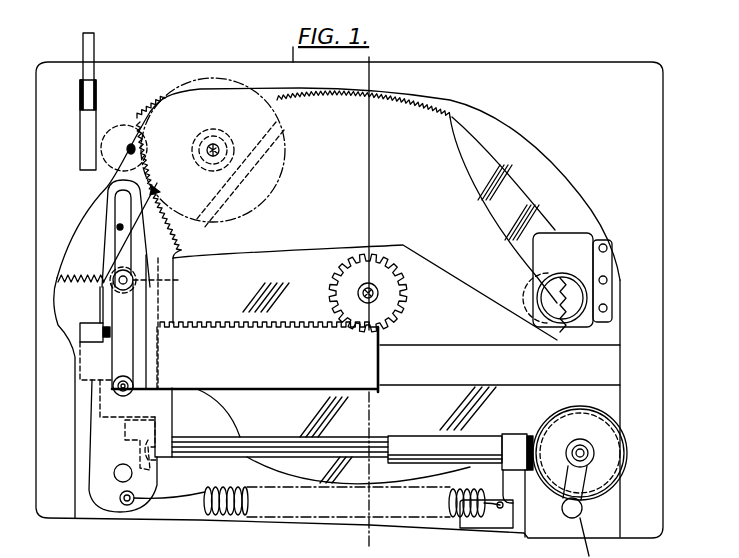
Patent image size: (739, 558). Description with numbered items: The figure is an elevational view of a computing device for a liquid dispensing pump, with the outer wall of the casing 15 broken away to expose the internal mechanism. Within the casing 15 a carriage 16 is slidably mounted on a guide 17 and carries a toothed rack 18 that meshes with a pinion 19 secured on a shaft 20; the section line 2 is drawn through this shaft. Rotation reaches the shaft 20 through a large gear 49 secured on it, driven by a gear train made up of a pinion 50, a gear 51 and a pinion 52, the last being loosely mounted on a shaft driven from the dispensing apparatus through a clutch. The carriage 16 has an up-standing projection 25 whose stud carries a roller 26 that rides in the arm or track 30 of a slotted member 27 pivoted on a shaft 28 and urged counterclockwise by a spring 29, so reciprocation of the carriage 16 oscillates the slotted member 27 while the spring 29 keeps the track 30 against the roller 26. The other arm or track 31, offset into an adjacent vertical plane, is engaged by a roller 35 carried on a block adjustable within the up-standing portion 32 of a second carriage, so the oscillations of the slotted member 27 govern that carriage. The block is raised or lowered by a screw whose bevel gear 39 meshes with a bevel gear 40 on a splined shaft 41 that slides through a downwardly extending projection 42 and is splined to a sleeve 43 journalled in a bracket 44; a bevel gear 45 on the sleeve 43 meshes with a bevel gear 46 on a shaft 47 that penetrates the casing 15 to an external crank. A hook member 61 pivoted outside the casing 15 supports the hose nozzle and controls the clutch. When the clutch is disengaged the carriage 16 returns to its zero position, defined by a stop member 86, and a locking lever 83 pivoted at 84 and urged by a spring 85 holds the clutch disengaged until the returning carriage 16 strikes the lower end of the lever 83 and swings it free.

The section line 2 is at (377, 297).
The casing 15 is at (650, 188).
The carriage 16 is at (297, 381).
The guide 17 is at (453, 377).
The toothed rack 18 is at (241, 327).
The pinion 19 is at (388, 305).
The shaft 20 is at (375, 280).
The up-standing projection 25 is at (140, 312).
The roller 26 is at (158, 280).
The slotted member 27 is at (138, 248).
The shaft 28 is at (117, 477).
The spring 29 is at (260, 513).
The arm or track 30 is at (182, 256).
The arm or track 31 is at (113, 213).
The up-standing portion 32 is at (252, 299).
The roller 35 is at (132, 385).
The bevel gear 39 is at (128, 443).
The bevel gear 40 is at (158, 470).
The splined shaft 41 is at (250, 447).
The downwardly extending projection 42 is at (168, 440).
The sleeve 43 is at (418, 455).
The bracket 44 is at (527, 513).
The bevel gear 45 is at (543, 387).
The bevel gear 46 is at (610, 413).
The shaft 47 is at (594, 452).
The large gear 49 is at (423, 127).
The pinion 50 is at (220, 130).
The gear 51 is at (277, 163).
The pinion 52 is at (140, 143).
The hook member 61 is at (89, 70).
The locking lever 83 is at (158, 190).
The pivot 84 is at (120, 227).
The spring 85 is at (52, 303).
The stop member 86 is at (90, 330).